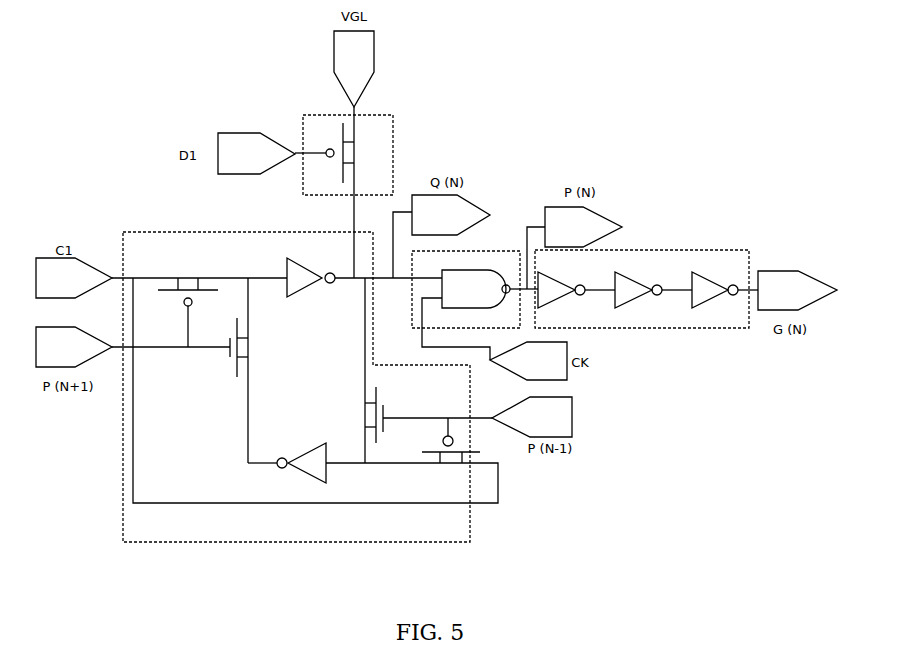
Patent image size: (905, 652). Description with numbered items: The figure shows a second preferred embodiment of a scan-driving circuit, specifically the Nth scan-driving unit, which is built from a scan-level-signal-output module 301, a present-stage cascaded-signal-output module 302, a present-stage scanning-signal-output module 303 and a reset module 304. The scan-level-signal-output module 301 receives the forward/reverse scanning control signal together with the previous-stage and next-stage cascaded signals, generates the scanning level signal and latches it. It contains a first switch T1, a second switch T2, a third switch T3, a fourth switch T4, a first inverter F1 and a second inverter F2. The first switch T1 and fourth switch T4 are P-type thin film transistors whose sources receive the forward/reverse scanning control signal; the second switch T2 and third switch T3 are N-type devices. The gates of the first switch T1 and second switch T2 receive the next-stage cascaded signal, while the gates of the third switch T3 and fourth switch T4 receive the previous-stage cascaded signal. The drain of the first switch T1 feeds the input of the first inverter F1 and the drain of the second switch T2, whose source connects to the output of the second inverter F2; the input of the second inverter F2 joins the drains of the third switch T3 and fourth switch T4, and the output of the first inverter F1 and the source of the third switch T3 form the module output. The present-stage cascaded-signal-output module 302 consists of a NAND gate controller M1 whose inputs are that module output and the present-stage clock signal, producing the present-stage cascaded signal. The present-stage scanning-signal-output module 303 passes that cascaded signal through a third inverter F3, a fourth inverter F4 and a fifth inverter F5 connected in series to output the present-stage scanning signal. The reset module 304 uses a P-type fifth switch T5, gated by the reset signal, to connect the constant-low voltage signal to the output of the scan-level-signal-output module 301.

The scan-level-signal-output module 301 is at (305, 412).
The present-stage cascaded-signal-output module 302 is at (469, 286).
The present-stage scanning-signal-output module 303 is at (646, 315).
The reset module 304 is at (379, 192).
The first switch T1 is at (188, 302).
The second switch T2 is at (253, 370).
The third switch T3 is at (417, 370).
The fourth switch T4 is at (451, 450).
The fifth switch T5 is at (335, 192).
The first inverter F1 is at (311, 285).
The second inverter F2 is at (301, 471).
The third inverter F3 is at (576, 282).
The fourth inverter F4 is at (653, 282).
The fifth inverter F5 is at (725, 282).
The NAND gate controller M1 is at (509, 232).